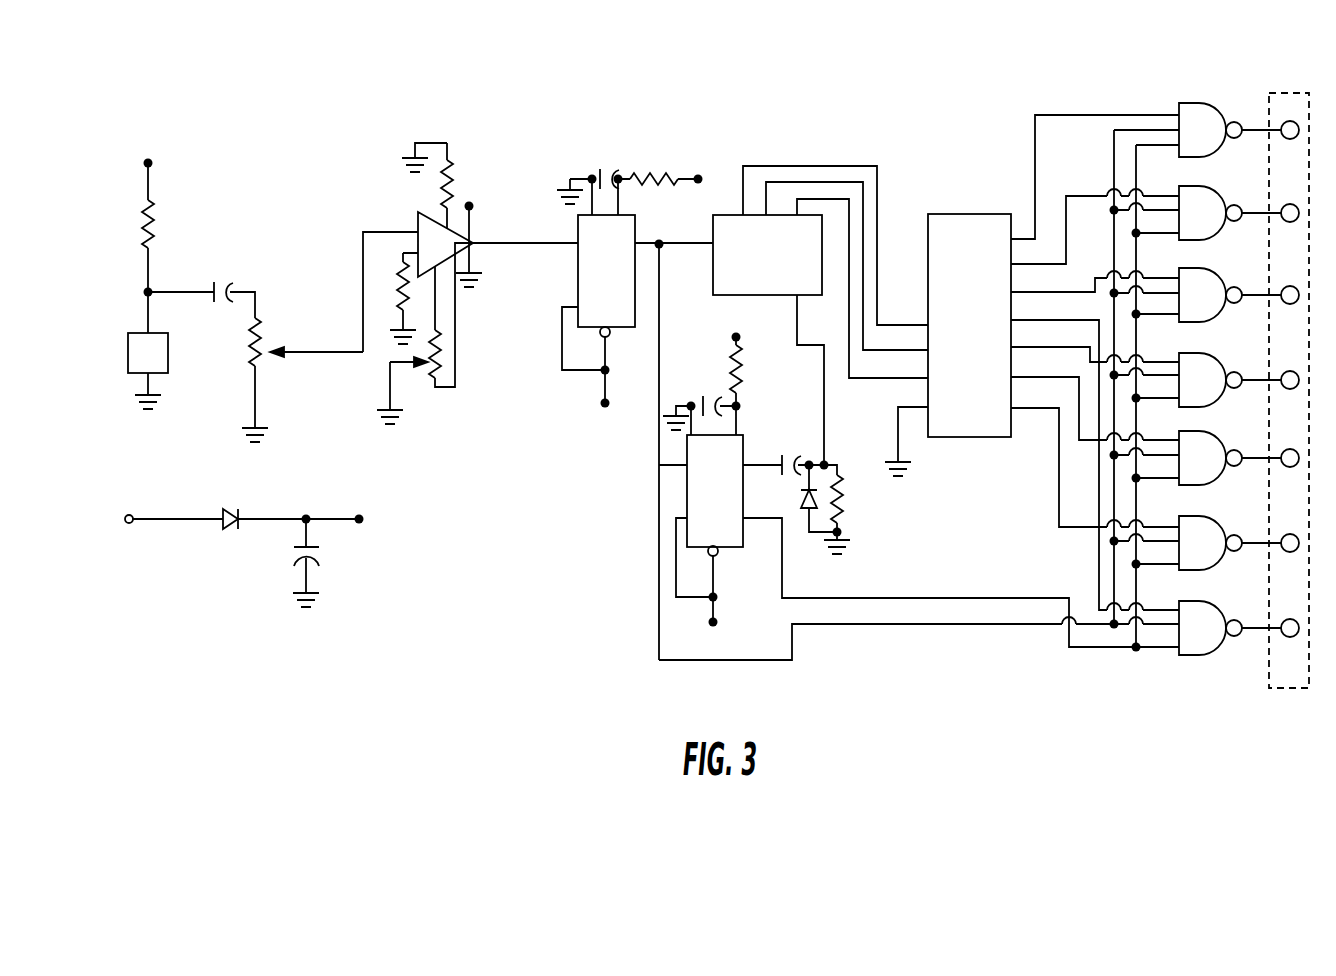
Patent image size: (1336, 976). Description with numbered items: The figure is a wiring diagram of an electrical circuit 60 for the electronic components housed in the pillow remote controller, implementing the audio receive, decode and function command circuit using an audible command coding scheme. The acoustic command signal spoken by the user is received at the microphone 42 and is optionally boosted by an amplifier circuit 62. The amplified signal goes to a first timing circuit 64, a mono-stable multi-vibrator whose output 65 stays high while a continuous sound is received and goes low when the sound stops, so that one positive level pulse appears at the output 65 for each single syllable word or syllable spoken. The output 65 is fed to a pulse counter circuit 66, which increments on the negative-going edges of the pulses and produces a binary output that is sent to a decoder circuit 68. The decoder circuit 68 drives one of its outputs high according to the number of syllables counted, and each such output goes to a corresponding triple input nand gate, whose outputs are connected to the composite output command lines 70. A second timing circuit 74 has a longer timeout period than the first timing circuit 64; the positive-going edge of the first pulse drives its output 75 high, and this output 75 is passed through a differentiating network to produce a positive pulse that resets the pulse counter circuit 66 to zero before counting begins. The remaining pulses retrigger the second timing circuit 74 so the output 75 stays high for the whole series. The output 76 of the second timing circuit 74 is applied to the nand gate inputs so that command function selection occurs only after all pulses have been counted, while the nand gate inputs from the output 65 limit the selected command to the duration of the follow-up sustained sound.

The electrical circuit 60 is at (101, 85).
The microphone 42 is at (128, 345).
The amplifier circuit 62 is at (418, 229).
The first timing circuit 64 is at (578, 265).
The output 65 is at (659, 240).
The pulse counter circuit 66 is at (713, 268).
The decoder circuit 68 is at (972, 214).
The composite output command lines 70 is at (1283, 688).
The second timing circuit 74 is at (687, 493).
The output 75 is at (760, 463).
The output 76 is at (763, 518).